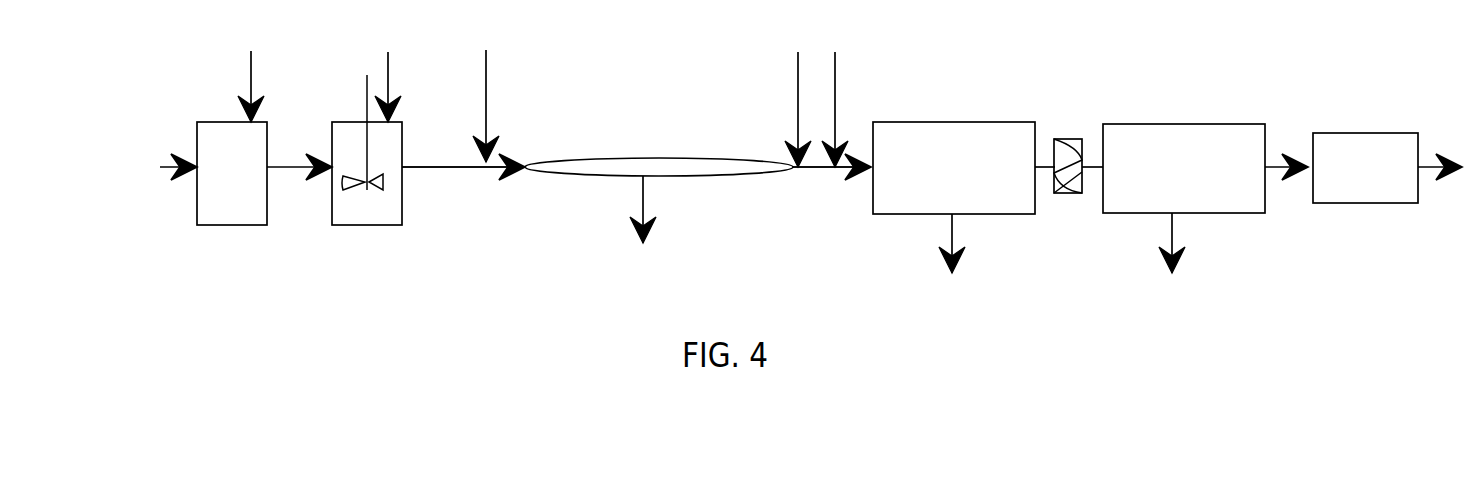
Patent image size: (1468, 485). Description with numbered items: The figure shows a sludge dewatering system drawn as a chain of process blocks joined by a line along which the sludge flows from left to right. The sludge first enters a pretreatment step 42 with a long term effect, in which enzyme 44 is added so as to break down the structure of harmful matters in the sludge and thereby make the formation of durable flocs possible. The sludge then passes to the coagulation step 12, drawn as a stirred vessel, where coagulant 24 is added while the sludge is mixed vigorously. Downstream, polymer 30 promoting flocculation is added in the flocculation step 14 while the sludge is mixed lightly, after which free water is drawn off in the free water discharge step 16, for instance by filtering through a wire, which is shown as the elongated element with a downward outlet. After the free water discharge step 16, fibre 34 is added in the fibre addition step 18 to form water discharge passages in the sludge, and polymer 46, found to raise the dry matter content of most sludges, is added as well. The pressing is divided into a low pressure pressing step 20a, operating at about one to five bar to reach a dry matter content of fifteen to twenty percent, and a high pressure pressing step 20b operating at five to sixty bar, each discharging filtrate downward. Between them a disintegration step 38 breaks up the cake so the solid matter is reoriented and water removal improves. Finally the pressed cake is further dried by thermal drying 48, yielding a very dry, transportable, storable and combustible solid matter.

The coagulation step 12 is at (358, 210).
The flocculation step 14 is at (488, 168).
The free water discharge step 16 is at (620, 168).
The fibre addition step 18 is at (837, 168).
The low pressure pressing step 20a is at (945, 150).
The high pressure pressing step 20b is at (1175, 143).
The coagulant 24 is at (388, 71).
The polymer 30 is at (485, 87).
The fibre 34 is at (787, 100).
The disintegration step 38 is at (1072, 193).
The pretreatment step 42 is at (222, 210).
The enzyme 44 is at (251, 71).
The polymer 46 is at (846, 100).
The thermal drying 48 is at (1390, 147).